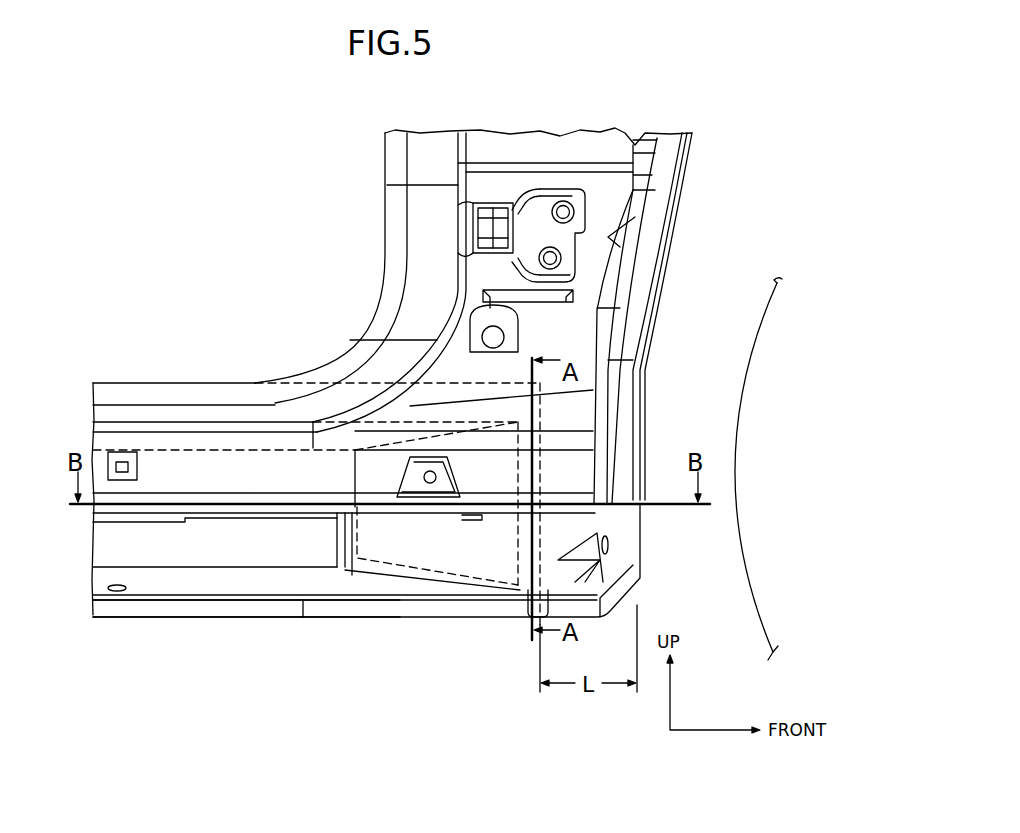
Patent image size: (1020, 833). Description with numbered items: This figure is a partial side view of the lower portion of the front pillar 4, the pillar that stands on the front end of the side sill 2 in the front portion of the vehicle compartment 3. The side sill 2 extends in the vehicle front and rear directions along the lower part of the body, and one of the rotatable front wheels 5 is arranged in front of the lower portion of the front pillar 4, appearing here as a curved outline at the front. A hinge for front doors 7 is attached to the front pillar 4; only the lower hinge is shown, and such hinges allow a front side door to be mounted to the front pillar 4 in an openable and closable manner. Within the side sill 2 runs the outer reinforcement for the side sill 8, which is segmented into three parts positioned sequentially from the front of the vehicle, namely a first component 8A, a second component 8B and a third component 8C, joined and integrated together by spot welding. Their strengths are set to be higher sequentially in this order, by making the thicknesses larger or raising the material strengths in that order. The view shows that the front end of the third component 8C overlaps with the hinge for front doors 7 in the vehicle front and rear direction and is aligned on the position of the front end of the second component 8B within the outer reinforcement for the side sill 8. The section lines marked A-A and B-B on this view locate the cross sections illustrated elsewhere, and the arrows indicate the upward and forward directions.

The side sill 2 is at (196, 383).
The vehicle compartment 3 is at (200, 252).
The front pillar 4 is at (400, 243).
The front wheel 5 is at (760, 632).
The hinge for front door 7 is at (577, 217).
The outer reinforcement for the side sill 8 is at (122, 555).
The first component 8A is at (597, 568).
The second component 8B is at (445, 557).
The third component 8C is at (227, 562).